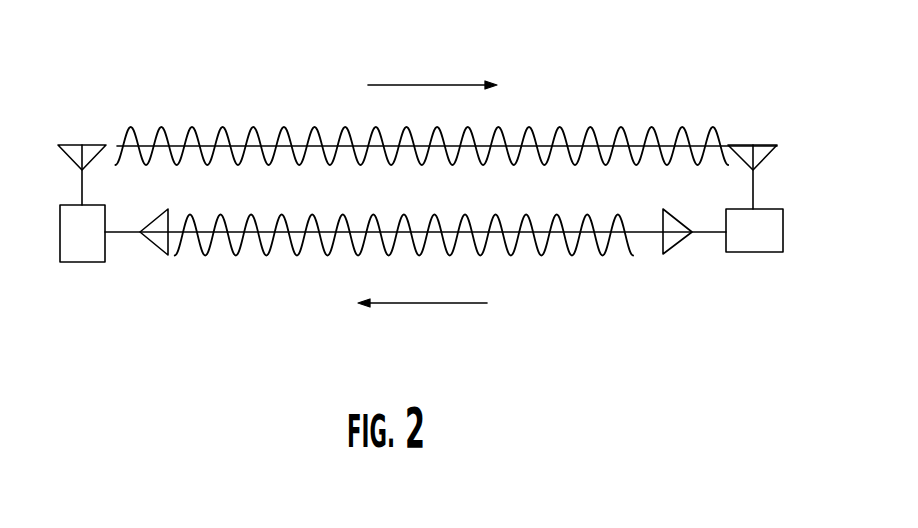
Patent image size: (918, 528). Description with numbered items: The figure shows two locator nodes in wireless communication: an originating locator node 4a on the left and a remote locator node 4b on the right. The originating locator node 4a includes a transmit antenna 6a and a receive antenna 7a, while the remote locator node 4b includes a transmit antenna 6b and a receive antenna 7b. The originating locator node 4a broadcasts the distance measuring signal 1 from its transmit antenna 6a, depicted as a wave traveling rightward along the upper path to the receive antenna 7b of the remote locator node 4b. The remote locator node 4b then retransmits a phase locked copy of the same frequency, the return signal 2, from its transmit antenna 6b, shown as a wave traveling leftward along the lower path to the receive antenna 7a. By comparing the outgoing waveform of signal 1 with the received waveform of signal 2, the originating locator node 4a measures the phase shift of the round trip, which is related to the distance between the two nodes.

The distance measuring signal 1 is at (397, 73).
The return signal 2 is at (412, 313).
The originating locator node 4a is at (72, 275).
The remote locator node 4b is at (767, 260).
The transmit antenna 6a is at (83, 127).
The transmit antenna 6b is at (673, 260).
The receive antenna 7a is at (167, 270).
The receive antenna 7b is at (765, 132).